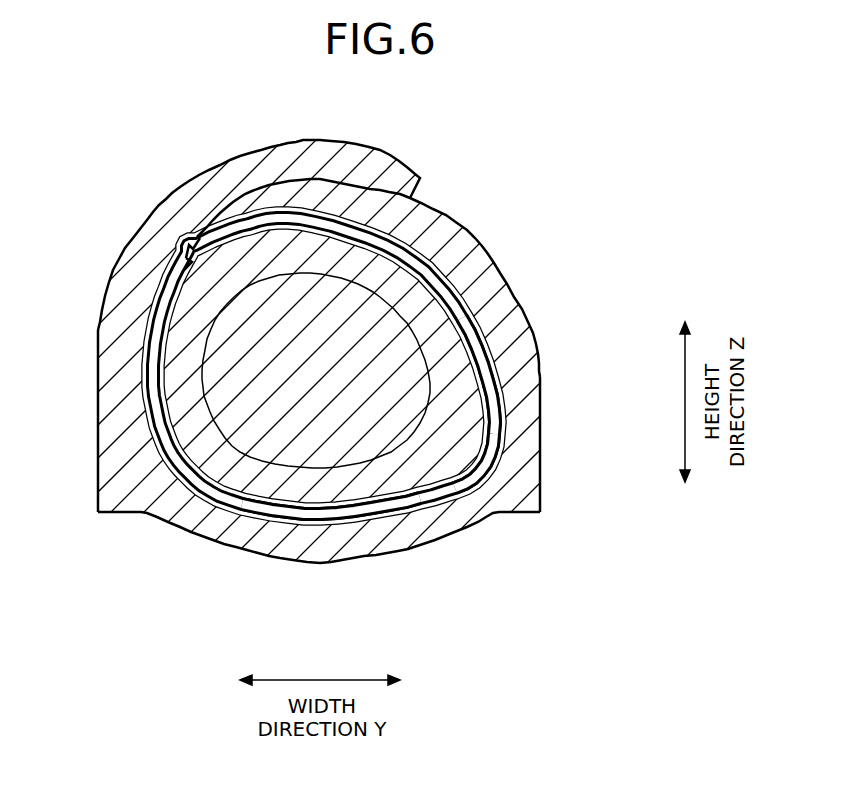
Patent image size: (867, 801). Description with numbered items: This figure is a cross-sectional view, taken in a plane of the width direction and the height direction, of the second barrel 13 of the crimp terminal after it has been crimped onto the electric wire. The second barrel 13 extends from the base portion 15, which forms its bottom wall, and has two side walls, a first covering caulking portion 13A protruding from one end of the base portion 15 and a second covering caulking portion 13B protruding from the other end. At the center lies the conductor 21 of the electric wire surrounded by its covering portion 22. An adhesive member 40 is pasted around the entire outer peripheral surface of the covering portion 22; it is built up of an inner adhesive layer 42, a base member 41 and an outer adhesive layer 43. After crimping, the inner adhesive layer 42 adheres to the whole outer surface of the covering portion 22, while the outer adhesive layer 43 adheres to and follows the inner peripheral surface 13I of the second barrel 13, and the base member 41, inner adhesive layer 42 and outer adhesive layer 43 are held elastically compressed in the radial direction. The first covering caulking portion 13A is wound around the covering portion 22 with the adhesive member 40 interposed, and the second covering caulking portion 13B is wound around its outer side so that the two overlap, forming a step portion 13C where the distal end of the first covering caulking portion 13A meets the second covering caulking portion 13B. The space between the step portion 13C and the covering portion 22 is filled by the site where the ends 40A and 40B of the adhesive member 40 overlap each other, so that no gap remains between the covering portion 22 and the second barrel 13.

The second barrel 13 is at (325, 371).
The first covering caulking portion 13A is at (498, 318).
The second covering caulking portion 13B is at (118, 294).
The step portion 13C is at (187, 238).
The inner peripheral surface 13I is at (437, 292).
The base portion 15 is at (359, 563).
The inner member / core 21 is at (293, 417).
The covering portion 22 is at (187, 439).
The adhesive member 40 is at (146, 335).
The end of adhesive member 40A is at (197, 237).
The end of adhesive member 40B is at (183, 263).
The base member 41 is at (421, 503).
The inner adhesive layer 42 is at (487, 402).
The outer adhesive layer 43 is at (495, 456).